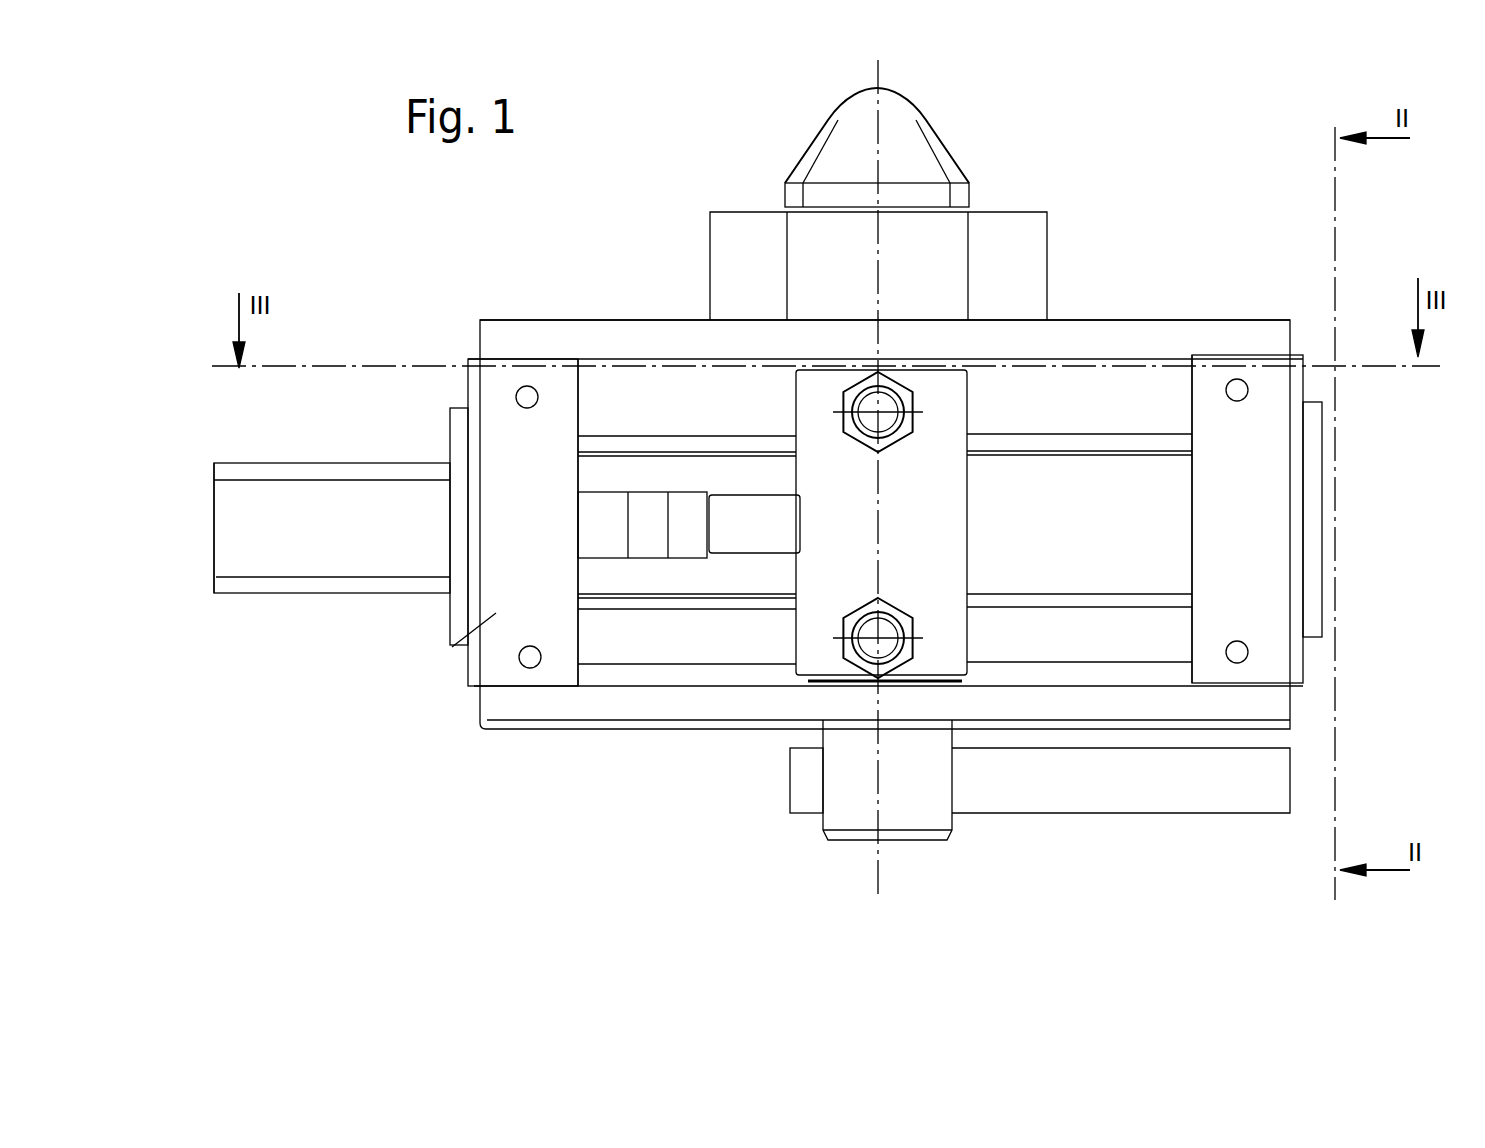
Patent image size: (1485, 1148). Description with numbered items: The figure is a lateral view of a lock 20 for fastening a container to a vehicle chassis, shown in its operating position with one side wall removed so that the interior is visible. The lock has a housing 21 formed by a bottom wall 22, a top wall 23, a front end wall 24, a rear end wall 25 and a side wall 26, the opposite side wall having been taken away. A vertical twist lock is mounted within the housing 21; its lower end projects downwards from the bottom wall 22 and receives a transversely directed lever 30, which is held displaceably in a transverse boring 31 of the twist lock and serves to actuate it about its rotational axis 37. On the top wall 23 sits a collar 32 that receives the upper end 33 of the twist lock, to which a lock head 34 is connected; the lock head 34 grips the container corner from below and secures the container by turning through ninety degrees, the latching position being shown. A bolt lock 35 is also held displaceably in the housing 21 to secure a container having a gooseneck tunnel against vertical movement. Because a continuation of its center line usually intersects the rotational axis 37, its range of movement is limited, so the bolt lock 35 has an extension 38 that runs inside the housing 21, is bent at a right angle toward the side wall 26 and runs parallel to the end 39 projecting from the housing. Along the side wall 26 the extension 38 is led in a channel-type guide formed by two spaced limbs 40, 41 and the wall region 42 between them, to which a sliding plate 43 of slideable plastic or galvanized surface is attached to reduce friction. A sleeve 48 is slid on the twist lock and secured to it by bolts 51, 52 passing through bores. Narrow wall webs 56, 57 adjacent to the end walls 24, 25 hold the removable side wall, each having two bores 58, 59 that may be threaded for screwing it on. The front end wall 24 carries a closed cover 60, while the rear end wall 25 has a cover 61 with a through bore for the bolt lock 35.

The lock 20 is at (546, 845).
The housing 21 is at (576, 288).
The bottom wall 22 is at (674, 701).
The top wall 23 is at (1095, 333).
The front end wall 24 is at (1307, 373).
The rear end wall 25 is at (472, 378).
The side wall 26 is at (653, 398).
The lever 30 is at (1103, 778).
The transverse boring 31 is at (965, 792).
The collar 32 is at (1010, 258).
The upper end 33 is at (908, 205).
The lock head 34 is at (893, 133).
The bolt lock 35 is at (338, 538).
The rotational axis 37 is at (880, 868).
The extension 38 is at (622, 577).
The end 39 is at (228, 539).
The limb 40 is at (703, 447).
The limb 41 is at (742, 603).
The wall region 42 is at (903, 715).
The sliding plate 43 is at (1112, 533).
The sleeve 48 is at (827, 598).
The bolt 51 is at (885, 405).
The bolt 52 is at (900, 640).
The wall web 56 is at (452, 647).
The wall web 57 is at (1257, 527).
The bore 58 is at (520, 397).
The bore 59 is at (526, 660).
The closed cover 60 is at (1313, 588).
The cover 61 is at (455, 438).